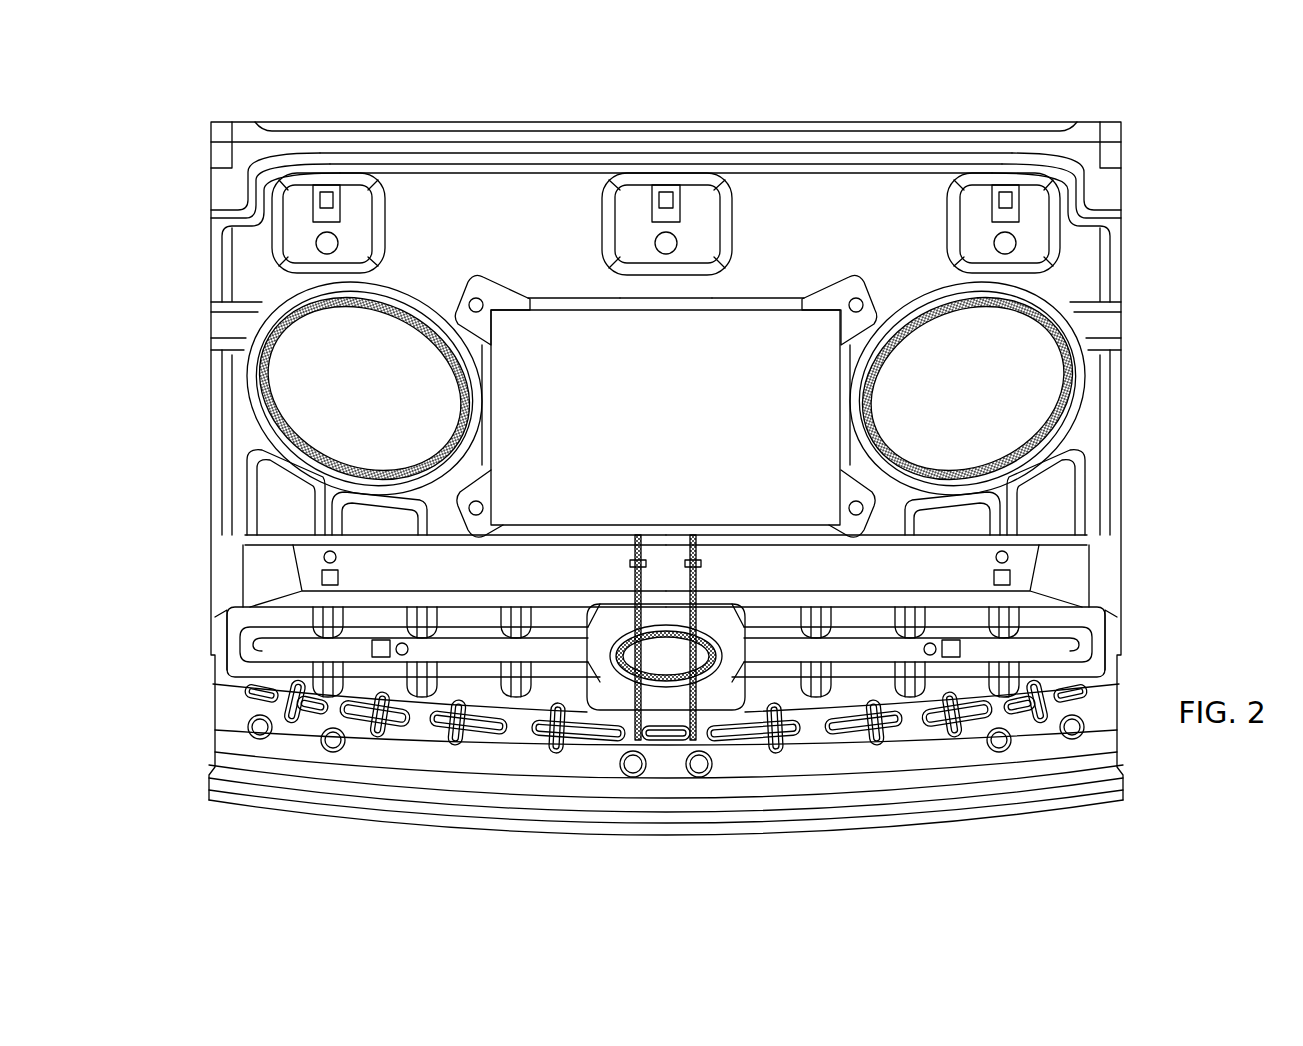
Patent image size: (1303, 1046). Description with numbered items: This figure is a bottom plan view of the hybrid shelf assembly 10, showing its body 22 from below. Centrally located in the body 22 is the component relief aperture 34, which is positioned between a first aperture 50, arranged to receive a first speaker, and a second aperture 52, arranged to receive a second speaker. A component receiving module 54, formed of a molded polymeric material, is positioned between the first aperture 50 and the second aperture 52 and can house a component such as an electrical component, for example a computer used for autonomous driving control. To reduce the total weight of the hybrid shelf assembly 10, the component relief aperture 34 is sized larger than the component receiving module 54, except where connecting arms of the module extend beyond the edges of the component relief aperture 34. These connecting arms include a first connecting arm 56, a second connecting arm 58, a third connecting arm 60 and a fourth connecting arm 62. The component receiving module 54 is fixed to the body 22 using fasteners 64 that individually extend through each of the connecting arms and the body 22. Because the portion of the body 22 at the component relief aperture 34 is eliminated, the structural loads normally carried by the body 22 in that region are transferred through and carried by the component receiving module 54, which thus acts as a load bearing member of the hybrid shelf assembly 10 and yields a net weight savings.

The hybrid shelf assembly 10 is at (1027, 100).
The body 22 is at (432, 200).
The component relief aperture 34 is at (772, 300).
The component receiving module 54 is at (569, 310).
The first connecting arm 56 is at (848, 283).
The fourth connecting arm 62 is at (497, 280).
The fasteners 64 is at (870, 300).
The third connecting arm 60 is at (466, 515).
The second connecting arm 58 is at (866, 515).
The second aperture 52 is at (320, 381).
The first aperture 50 is at (1012, 381).